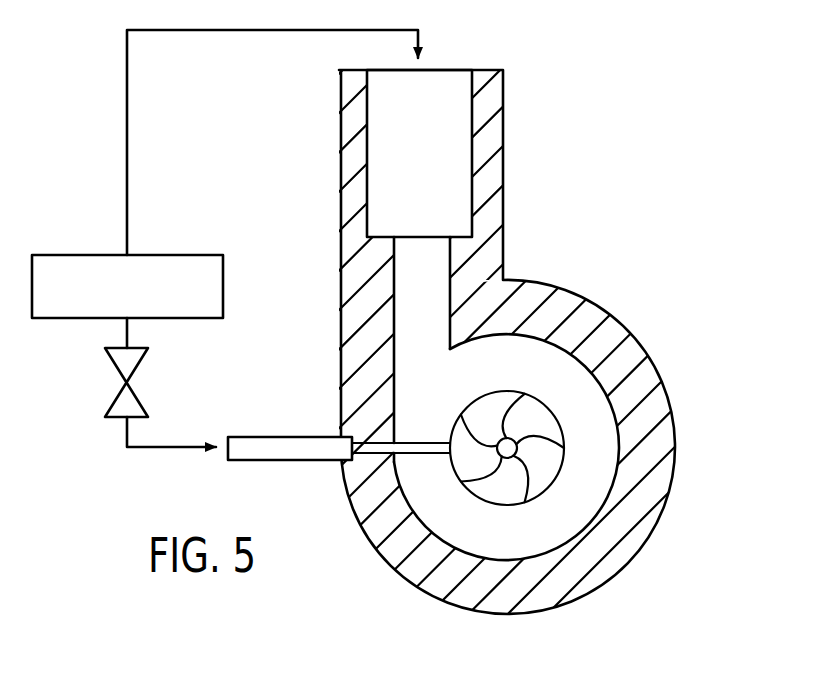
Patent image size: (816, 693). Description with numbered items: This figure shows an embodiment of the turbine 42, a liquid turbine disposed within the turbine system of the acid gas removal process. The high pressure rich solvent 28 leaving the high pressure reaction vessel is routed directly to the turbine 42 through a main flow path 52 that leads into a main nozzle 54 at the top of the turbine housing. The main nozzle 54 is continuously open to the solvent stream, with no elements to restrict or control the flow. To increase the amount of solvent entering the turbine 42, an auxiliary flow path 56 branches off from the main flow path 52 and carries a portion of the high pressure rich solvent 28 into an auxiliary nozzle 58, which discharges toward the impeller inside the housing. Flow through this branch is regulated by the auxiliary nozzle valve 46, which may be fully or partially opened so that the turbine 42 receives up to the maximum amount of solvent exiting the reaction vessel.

The high pressure rich solvent 28 is at (160, 255).
The turbine 42 is at (634, 120).
The auxiliary nozzle valve 46 is at (118, 395).
The main flow path 52 is at (128, 141).
The main nozzle 54 is at (443, 70).
The auxiliary flow path 56 is at (171, 450).
The auxiliary nozzle 58 is at (290, 437).